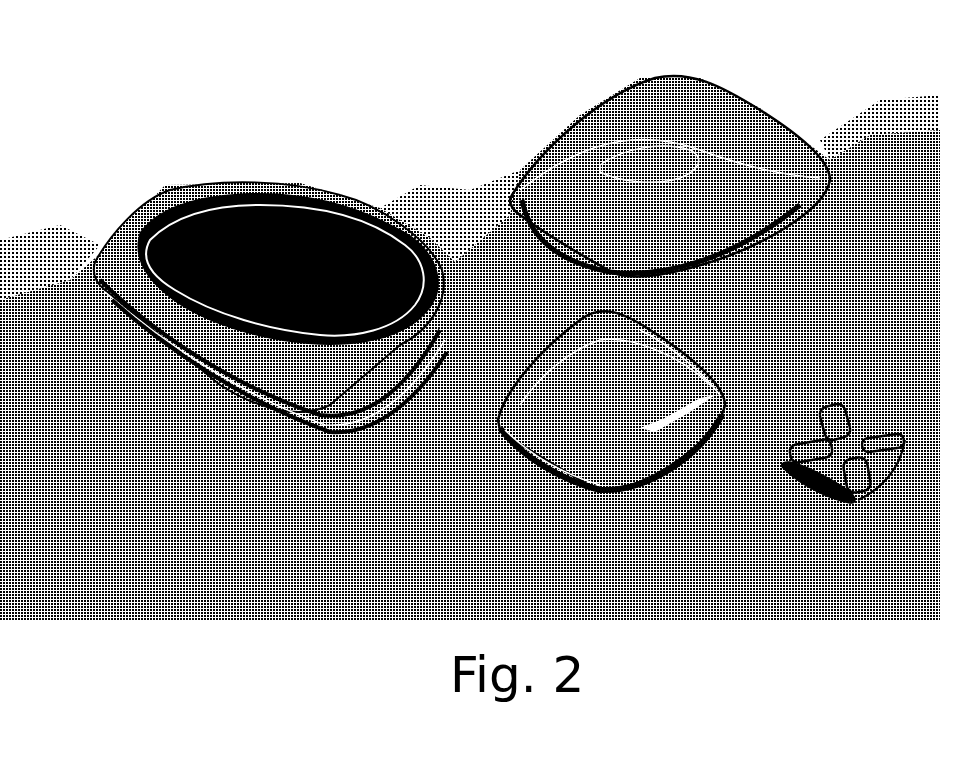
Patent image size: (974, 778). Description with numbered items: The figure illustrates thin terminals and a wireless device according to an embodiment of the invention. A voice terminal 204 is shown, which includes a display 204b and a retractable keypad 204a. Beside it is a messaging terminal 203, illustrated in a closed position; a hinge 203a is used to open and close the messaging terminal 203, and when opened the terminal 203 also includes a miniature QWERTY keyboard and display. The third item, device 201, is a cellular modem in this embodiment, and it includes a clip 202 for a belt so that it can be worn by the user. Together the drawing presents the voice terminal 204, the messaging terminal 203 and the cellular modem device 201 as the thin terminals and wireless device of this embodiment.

The device 201 is at (555, 125).
The clip 202 is at (853, 502).
The messaging terminal 203 is at (212, 365).
The hinge 203a is at (318, 185).
The voice terminal 204 is at (554, 467).
The retractable keypad 204a is at (520, 445).
The display 204b is at (706, 378).